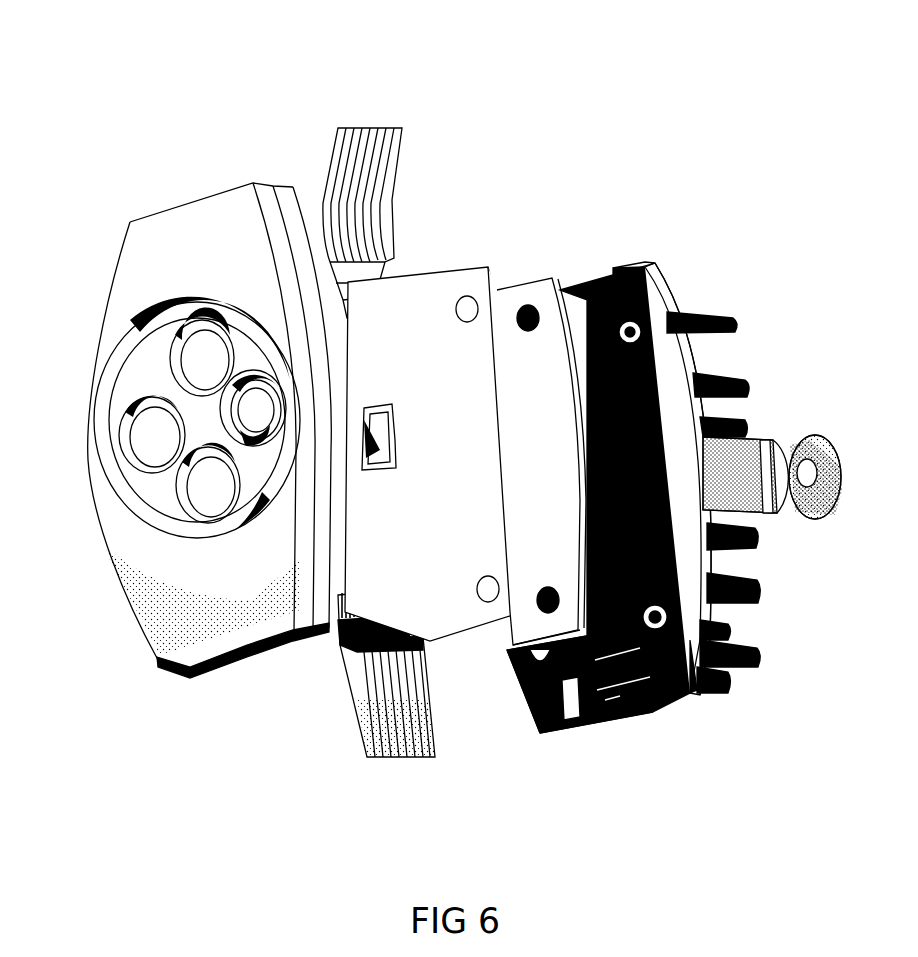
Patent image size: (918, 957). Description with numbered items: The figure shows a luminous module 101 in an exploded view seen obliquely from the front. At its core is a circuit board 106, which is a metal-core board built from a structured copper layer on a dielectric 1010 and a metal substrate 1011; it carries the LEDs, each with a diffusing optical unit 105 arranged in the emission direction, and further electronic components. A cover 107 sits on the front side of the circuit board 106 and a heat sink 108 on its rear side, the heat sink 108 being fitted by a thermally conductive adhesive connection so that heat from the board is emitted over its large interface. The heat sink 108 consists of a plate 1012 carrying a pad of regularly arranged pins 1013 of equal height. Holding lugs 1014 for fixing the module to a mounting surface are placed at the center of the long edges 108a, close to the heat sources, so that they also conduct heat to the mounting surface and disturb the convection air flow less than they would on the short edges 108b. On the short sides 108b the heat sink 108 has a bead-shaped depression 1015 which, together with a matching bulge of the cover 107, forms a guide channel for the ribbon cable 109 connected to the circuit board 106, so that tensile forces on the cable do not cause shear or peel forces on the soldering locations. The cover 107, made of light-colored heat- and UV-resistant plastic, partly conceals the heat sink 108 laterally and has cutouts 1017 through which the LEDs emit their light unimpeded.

The luminous module 101 is at (574, 97).
The diffusing optical unit 105 is at (273, 403).
The circuit board 106 is at (465, 411).
The dielectric 1010 is at (462, 268).
The substrate 1011 is at (527, 282).
The cover 107 is at (163, 662).
The heat sink 108 is at (657, 260).
The long edges of the heat sink 108a is at (693, 356).
The short edges of the heat sink 108b is at (663, 698).
The ribbon cable 109 is at (338, 150).
The plate 1012 is at (553, 736).
The pins 1013 is at (767, 598).
The holding lugs 1014 is at (823, 437).
The depression 1015 is at (583, 283).
The cutouts 1017 is at (205, 350).